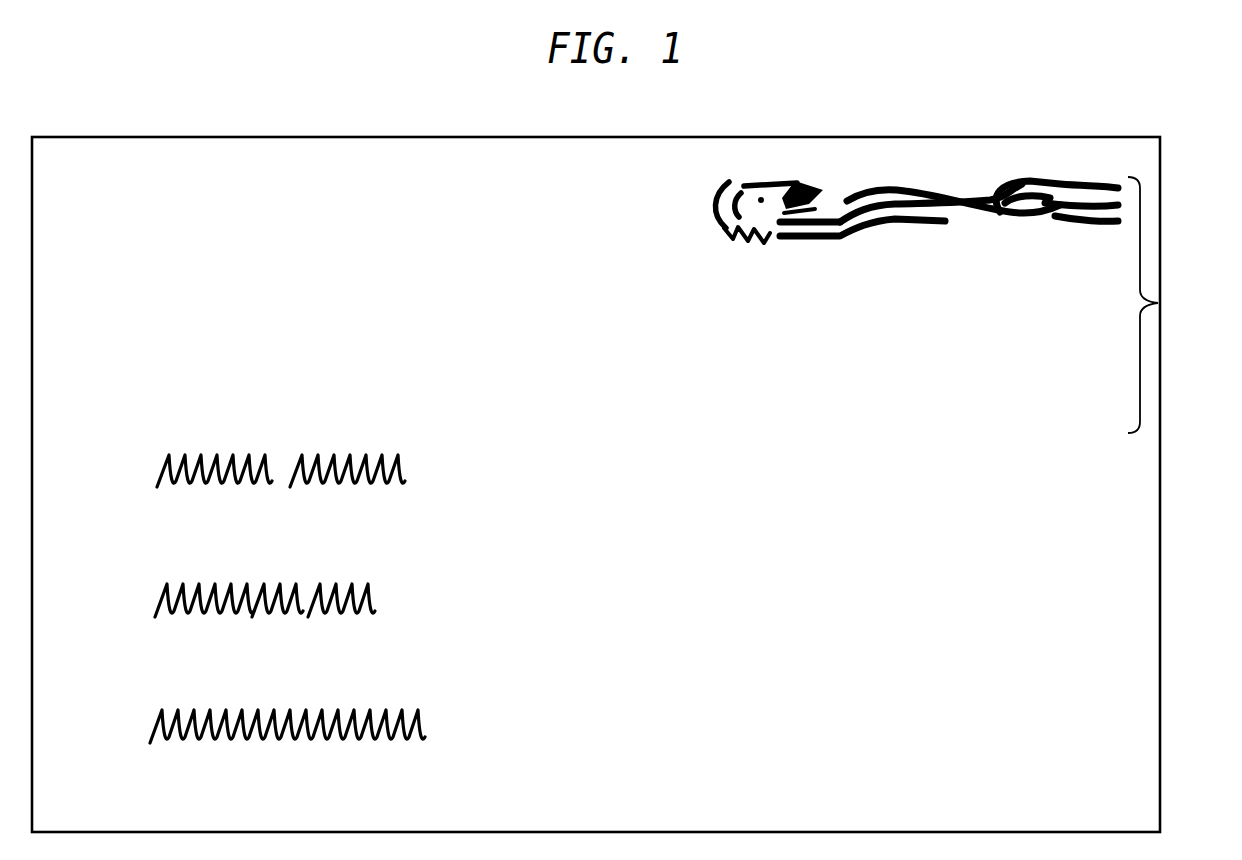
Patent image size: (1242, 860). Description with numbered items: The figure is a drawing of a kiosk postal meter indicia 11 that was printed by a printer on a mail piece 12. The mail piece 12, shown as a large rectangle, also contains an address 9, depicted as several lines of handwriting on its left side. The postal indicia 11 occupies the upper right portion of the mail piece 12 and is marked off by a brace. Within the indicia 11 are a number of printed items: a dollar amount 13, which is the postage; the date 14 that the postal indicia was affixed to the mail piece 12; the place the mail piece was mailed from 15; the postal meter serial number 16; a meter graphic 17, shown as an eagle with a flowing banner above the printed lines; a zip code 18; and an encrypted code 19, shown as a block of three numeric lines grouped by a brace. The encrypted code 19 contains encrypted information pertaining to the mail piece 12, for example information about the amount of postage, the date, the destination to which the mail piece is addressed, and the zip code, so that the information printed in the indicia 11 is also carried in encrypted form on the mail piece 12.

The address 9 is at (211, 450).
The kiosk postal meter indicia 11 is at (1158, 303).
The mail piece 12 is at (250, 151).
The dollar amount 13 is at (903, 343).
The date 14 is at (705, 302).
The place the mail piece was mailed from 15 is at (706, 433).
The postal meter serial number 16 is at (707, 265).
The meter graphic 17 is at (713, 197).
The zip code 18 is at (967, 447).
The encrypted code 19 is at (695, 315).